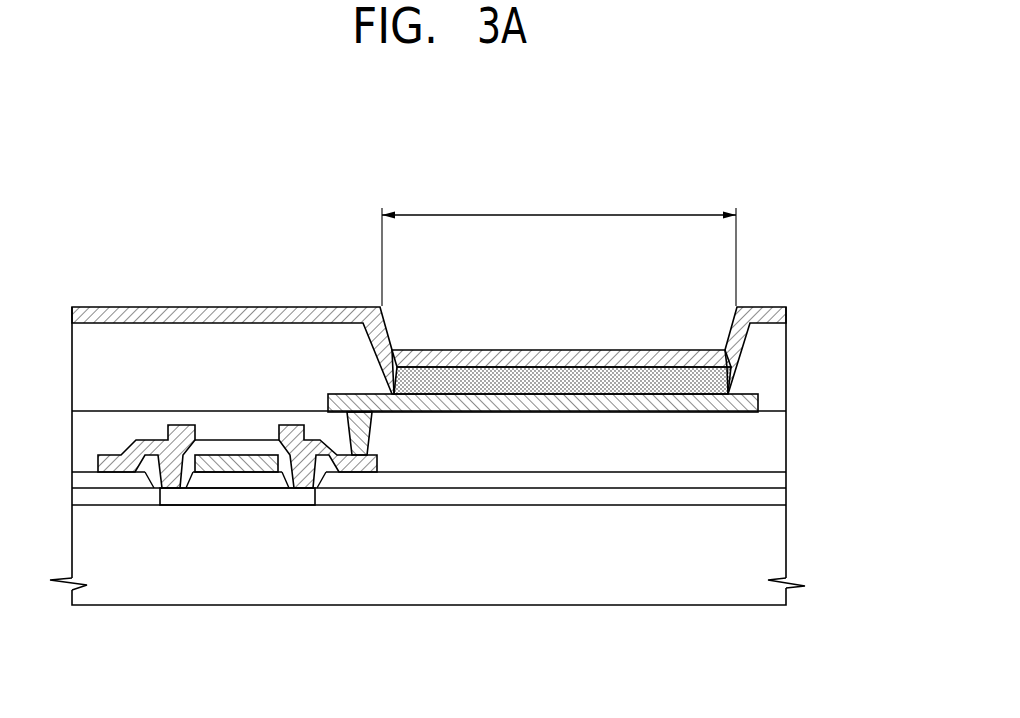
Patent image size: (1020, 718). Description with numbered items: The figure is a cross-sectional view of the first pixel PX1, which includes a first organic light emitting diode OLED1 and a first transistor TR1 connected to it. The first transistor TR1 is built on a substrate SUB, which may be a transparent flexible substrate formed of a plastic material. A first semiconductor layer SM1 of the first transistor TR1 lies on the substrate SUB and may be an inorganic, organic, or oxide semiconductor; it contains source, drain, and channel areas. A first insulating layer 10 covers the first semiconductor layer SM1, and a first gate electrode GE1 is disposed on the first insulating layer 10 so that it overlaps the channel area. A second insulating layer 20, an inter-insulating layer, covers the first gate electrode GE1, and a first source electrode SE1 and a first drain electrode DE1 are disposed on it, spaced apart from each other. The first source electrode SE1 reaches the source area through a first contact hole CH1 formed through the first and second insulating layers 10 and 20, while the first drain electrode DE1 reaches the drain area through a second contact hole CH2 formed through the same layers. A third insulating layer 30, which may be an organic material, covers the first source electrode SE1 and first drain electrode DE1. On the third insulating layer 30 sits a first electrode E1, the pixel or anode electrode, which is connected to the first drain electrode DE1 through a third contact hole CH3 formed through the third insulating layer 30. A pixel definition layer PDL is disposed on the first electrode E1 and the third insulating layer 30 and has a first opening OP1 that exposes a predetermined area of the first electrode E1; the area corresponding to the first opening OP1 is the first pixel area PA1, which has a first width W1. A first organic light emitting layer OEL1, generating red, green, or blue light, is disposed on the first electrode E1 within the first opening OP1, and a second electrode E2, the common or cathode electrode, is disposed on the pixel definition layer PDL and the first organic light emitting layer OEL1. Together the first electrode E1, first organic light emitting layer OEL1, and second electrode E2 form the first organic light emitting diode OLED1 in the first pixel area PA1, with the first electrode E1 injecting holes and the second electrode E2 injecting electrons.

The first pixel PX1 is at (728, 154).
The first width W1 is at (559, 248).
The first pixel area PA1 is at (674, 304).
The first organic light emitting diode OLED1 is at (543, 330).
The first electrode E1 is at (471, 403).
The first organic light emitting layer OEL1 is at (528, 380).
The second electrode E2 is at (470, 283).
The pixel definition layer PDL is at (777, 366).
The first opening OP1 is at (722, 396).
The third insulating layer 30 is at (773, 447).
The second insulating layer 20 is at (780, 479).
The first insulating layer 10 is at (778, 503).
The substrate SUB is at (773, 559).
The first contact hole CH1 is at (140, 445).
The second contact hole CH2 is at (345, 452).
The third contact hole CH3 is at (352, 441).
The first transistor TR1 is at (237, 565).
The first source electrode SE1 is at (120, 468).
The first gate electrode GE1 is at (220, 467).
The first semiconductor layer SM1 is at (260, 497).
The first drain electrode DE1 is at (370, 458).